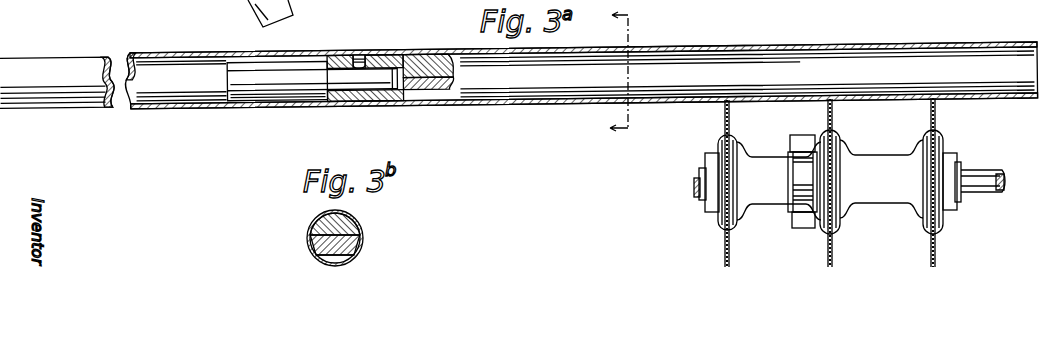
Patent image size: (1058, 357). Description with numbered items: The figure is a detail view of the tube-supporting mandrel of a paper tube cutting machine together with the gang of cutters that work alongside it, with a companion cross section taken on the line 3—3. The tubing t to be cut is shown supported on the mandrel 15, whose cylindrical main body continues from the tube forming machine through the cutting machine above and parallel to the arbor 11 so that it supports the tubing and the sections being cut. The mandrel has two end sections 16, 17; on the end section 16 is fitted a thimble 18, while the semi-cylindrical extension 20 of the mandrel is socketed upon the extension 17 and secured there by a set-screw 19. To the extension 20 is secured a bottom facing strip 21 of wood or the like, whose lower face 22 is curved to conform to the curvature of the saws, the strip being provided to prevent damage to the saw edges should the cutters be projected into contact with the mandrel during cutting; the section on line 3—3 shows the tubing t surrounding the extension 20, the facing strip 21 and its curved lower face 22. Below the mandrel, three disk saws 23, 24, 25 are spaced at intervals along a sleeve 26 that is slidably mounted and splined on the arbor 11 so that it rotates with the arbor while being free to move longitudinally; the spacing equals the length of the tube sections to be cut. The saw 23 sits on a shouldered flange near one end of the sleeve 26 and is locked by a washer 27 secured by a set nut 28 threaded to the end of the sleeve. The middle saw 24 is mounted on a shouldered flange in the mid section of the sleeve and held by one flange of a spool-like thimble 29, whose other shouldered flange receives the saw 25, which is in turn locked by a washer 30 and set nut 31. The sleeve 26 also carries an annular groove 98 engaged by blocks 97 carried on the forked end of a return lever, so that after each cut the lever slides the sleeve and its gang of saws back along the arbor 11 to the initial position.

In FIG. 3A, the mandrel 15 is at (78, 62).
In FIG. 3A, the tubing t is at (186, 56).
In FIG. 3B, the tubing t is at (311, 214).
In FIG. 3A, the end section 16 is at (292, 94).
In FIG. 3A, the end section 17 is at (364, 104).
In FIG. 3A, the thimble 18 is at (332, 60).
In FIG. 3A, the set-screw 19 is at (360, 57).
In FIG. 3A, the semi-cylindrical extension 20 is at (434, 58).
In FIG. 3B, the semi-cylindrical extension 20 is at (360, 225).
In FIG. 3A, the bottom facing strip 21 is at (440, 93).
In FIG. 3B, the bottom facing strip 21 is at (360, 243).
In FIG. 3B, the lower face 22 is at (330, 258).
In FIG. 3A, the section line 3 is at (627, 74).
In FIG. 3A, the saw 23 is at (733, 128).
In FIG. 3A, the middle saw 24 is at (836, 128).
In FIG. 3A, the saw 25 is at (939, 128).
In FIG. 3A, the sleeve 26 is at (766, 206).
In FIG. 3A, the washer 27 is at (719, 150).
In FIG. 3A, the set nut 28 is at (704, 160).
In FIG. 3A, the spool-like thimble 29 is at (887, 170).
In FIG. 3A, the washer 30 is at (950, 208).
In FIG. 3A, the set nut 31 is at (960, 200).
In FIG. 3A, the arbor 11 is at (994, 176).
In FIG. 3A, the blocks 97 is at (793, 148).
In FIG. 3A, the annular groove 98 is at (792, 176).